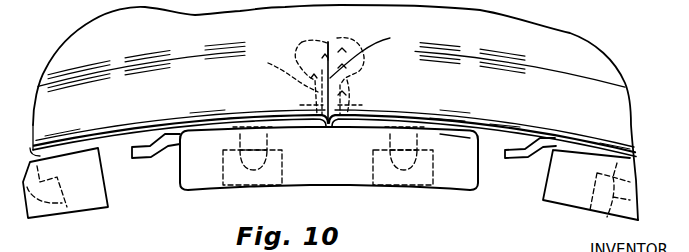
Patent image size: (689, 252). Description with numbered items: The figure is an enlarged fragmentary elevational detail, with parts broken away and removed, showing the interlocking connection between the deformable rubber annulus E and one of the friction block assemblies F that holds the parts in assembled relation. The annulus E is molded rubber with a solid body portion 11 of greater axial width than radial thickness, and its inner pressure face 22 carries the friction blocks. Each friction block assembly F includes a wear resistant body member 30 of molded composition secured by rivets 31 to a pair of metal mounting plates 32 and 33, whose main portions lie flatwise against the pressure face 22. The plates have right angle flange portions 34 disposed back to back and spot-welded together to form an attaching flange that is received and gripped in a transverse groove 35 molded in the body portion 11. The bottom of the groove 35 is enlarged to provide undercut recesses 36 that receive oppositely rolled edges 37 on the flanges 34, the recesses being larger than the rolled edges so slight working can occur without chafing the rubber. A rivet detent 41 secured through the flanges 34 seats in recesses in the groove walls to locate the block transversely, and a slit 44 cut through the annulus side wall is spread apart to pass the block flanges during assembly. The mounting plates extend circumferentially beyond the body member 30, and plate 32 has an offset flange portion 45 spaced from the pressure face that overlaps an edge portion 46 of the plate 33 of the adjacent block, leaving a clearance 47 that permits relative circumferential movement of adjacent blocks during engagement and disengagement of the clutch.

The body portion 11 is at (75, 40).
The pressure face 22 is at (468, 131).
The body member 30 is at (92, 200).
The rivets 31 is at (243, 166).
The mounting plate 32 is at (200, 116).
The mounting plate 33 is at (448, 133).
The flange portions 34 is at (310, 105).
The transverse groove 35 is at (340, 82).
The undercut recesses 36 is at (302, 42).
The rolled edges 37 is at (331, 41).
The rivet detent 41 is at (284, 73).
The slit 44 is at (369, 75).
The offset flange portion 45 is at (150, 158).
The edge portion 46 is at (115, 139).
The clearance 47 is at (151, 140).
The annulus E is at (563, 47).
The friction block assembly F is at (363, 187).